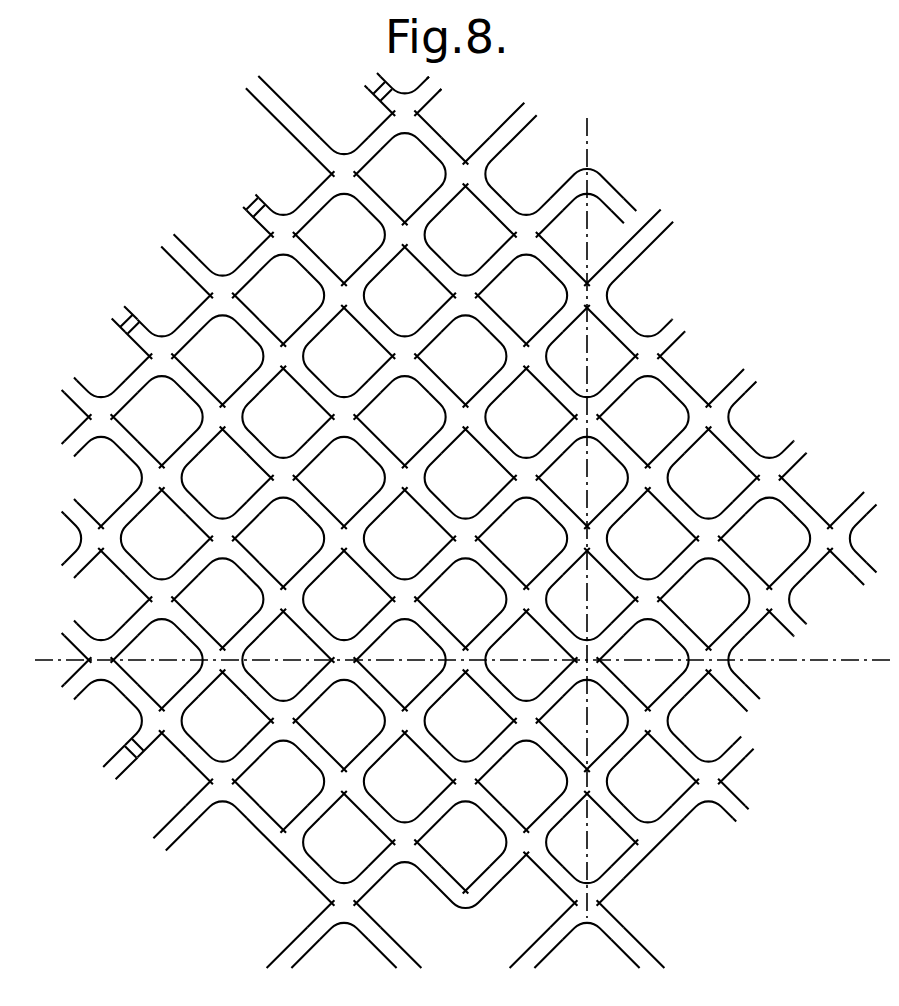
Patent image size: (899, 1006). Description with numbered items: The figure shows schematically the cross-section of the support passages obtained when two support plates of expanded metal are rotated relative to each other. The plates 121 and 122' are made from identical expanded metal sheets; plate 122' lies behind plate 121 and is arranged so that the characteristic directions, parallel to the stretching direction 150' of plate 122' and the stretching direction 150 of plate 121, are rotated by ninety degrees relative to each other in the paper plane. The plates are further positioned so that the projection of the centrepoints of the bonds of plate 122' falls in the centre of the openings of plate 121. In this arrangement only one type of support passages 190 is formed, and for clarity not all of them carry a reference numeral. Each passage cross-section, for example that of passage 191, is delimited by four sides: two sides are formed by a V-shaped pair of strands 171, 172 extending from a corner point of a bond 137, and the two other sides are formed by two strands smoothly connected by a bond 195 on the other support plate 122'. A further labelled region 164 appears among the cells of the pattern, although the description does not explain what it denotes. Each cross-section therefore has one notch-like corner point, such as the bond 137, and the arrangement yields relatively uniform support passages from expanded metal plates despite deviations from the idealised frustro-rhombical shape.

The plate 121 is at (73, 394).
The plate 122' is at (119, 349).
The bond 137 is at (232, 540).
The stretching direction 150 is at (624, 518).
The stretching direction 150' is at (462, 691).
The pixel cell 164 is at (343, 442).
The strand 171 is at (327, 466).
The strand 172 is at (253, 572).
The support passages 190 is at (490, 494).
The passage 191 is at (312, 560).
The bond 195 is at (346, 552).